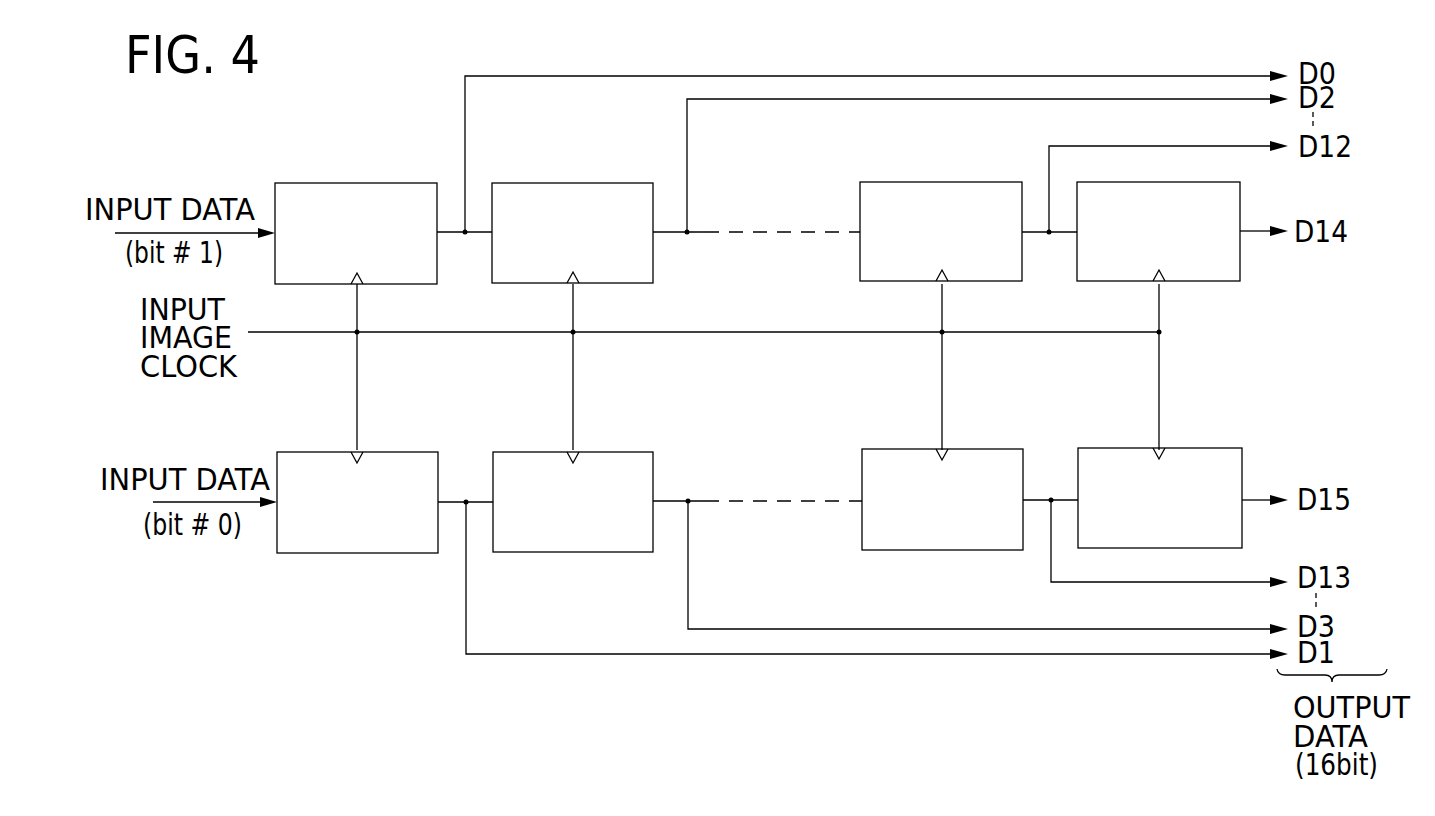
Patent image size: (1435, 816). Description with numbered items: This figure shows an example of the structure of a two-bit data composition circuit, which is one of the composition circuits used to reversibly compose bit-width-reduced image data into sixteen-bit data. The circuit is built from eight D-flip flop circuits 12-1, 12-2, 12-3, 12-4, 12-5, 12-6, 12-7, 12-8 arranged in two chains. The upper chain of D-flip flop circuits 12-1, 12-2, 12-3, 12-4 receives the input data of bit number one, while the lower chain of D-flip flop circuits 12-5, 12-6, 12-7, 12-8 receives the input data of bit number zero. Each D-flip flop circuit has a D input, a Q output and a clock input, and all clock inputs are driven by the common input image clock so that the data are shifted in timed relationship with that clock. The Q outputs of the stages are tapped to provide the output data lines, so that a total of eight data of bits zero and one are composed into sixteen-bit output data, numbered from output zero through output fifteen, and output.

The D-flip flop circuit 12-1 is at (353, 183).
The D-flip flop circuit 12-2 is at (569, 183).
The D-flip flop circuit 12-3 is at (937, 182).
The D-flip flop circuit 12-4 is at (1213, 281).
The D-flip flop circuit 12-5 is at (357, 553).
The D-flip flop circuit 12-6 is at (573, 552).
The D-flip flop circuit 12-7 is at (942, 550).
The D-flip flop circuit 12-8 is at (1233, 423).